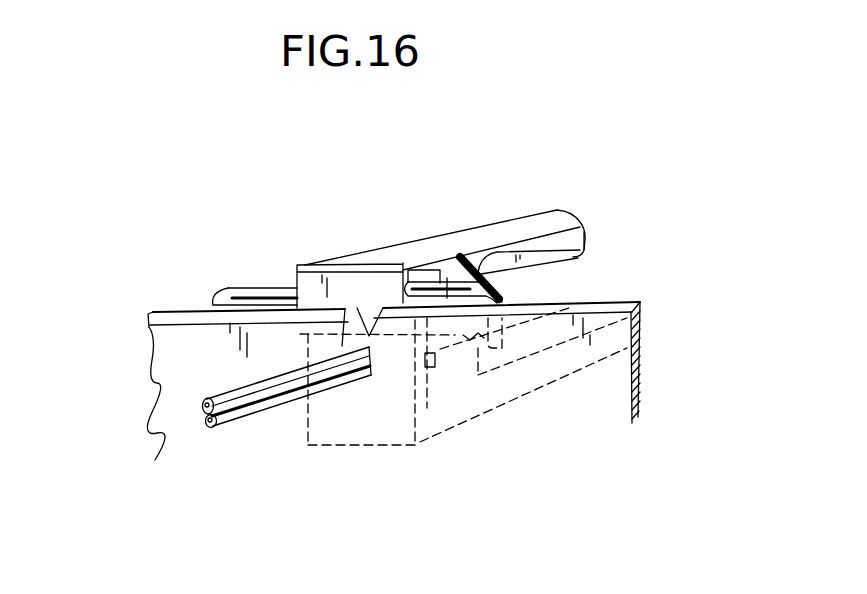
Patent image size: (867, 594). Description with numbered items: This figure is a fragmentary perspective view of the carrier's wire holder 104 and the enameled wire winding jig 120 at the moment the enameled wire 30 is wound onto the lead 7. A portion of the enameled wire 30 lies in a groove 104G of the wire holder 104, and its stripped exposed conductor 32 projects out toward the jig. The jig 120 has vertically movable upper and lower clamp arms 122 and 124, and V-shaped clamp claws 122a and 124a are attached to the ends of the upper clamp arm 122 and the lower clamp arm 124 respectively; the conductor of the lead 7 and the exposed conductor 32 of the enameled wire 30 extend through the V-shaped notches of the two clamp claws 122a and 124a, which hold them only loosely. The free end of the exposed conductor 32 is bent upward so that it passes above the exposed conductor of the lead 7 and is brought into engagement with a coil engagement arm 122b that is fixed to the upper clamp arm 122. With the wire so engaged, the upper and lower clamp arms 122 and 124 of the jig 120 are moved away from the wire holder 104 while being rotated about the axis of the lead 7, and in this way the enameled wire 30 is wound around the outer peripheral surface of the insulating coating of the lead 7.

The lead 7 is at (207, 407).
The enameled wire 30 is at (256, 405).
The exposed conductor 32 is at (580, 248).
The wire holder 104 is at (603, 307).
The groove 104G is at (368, 343).
The enameled wire winding jig 120 is at (318, 260).
The upper clamp arm 122 is at (472, 237).
The clamp claw 122a is at (305, 293).
The coil engagement arm 122b is at (442, 290).
The lower clamp arm 124 is at (548, 367).
The clamp claw 124a is at (425, 401).